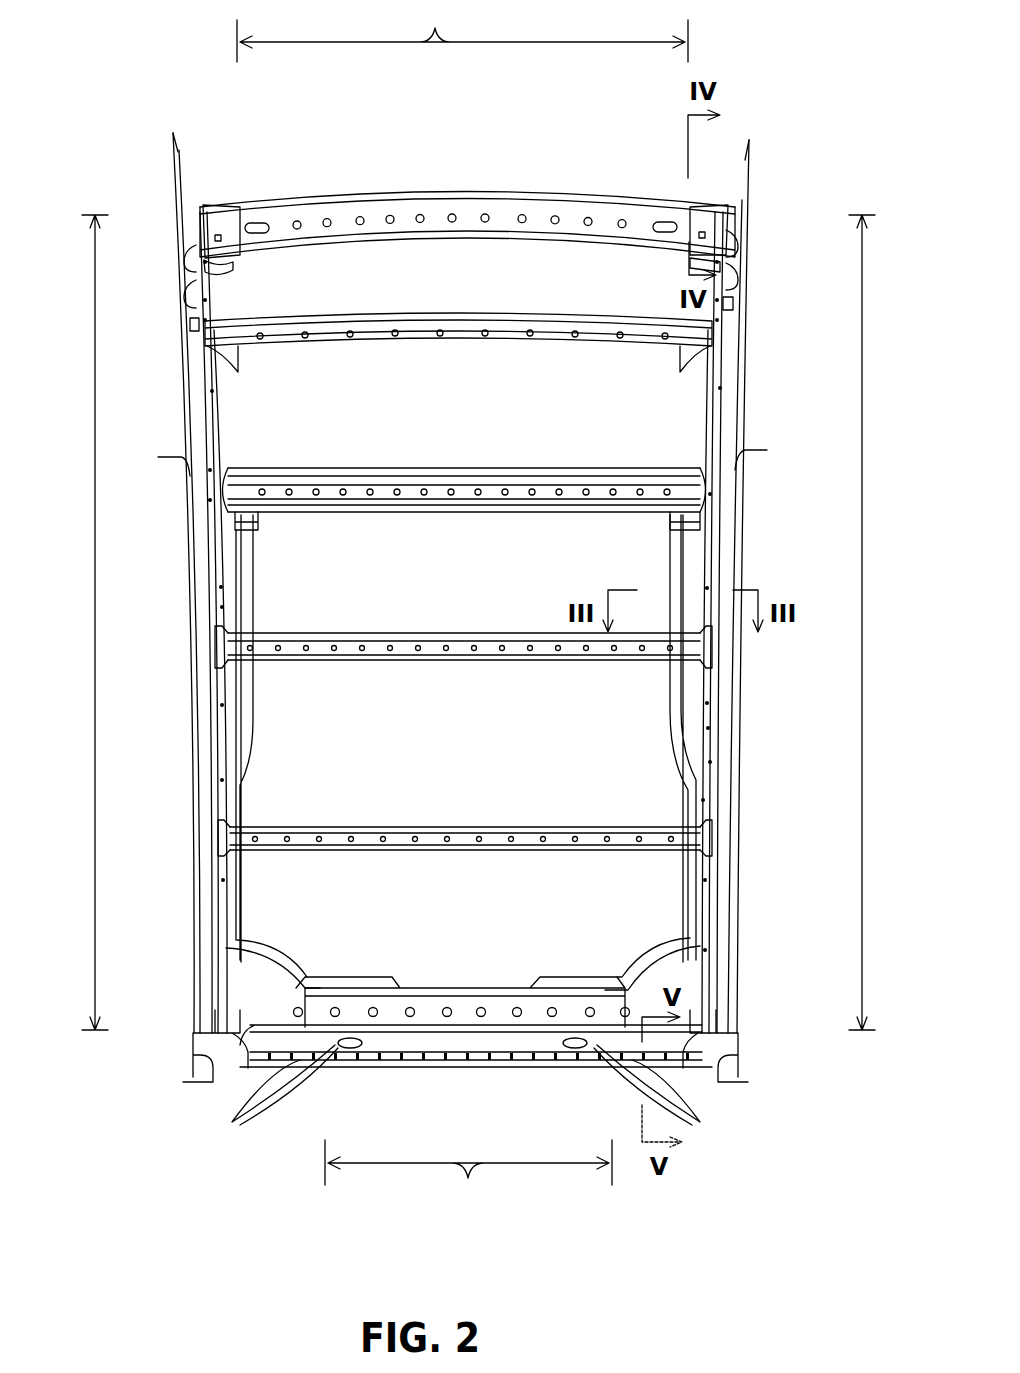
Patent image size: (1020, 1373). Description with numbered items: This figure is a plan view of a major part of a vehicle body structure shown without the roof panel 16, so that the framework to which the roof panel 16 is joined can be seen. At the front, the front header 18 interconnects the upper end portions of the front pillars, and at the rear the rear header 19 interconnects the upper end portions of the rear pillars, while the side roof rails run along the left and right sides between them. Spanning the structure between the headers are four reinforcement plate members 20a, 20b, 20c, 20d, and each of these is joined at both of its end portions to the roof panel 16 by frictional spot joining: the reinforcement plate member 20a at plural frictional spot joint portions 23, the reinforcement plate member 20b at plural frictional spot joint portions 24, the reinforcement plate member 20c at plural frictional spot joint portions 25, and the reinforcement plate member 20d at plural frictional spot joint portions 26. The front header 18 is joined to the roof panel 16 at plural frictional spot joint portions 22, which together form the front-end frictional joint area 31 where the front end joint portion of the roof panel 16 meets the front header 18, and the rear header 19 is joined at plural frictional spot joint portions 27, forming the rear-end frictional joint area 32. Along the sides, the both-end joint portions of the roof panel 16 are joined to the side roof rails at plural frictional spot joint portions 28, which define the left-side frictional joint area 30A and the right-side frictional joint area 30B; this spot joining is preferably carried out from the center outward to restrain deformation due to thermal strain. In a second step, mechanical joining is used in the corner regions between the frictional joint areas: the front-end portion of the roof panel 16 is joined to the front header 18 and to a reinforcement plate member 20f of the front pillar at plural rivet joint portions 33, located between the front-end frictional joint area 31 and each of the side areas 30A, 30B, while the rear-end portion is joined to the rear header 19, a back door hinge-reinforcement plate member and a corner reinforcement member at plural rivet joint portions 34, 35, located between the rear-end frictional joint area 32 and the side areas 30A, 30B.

The roof panel 16 is at (813, 162).
The front header 18 is at (504, 226).
The rear header 19 is at (474, 1052).
The reinforcement plate member 20a is at (487, 348).
The reinforcement plate member 20b is at (490, 514).
The reinforcement plate member 20c is at (490, 662).
The reinforcement plate member 20d is at (490, 852).
The reinforcement plate member of the front pillar 20f is at (226, 255).
The frictional spot joint portions 22 is at (415, 194).
The frictional spot joint portions 23 is at (240, 352).
The frictional spot joint portions 24 is at (220, 490).
The frictional spot joint portions 25 is at (220, 660).
The frictional spot joint portions 26 is at (225, 851).
The frictional spot joint portions 27 is at (372, 1060).
The frictional spot joint portions 28 is at (211, 391).
The left-side frictional joint area 30A is at (92, 598).
The right-side frictional joint area 30B is at (870, 598).
The front-end frictional joint area 31 is at (462, 31).
The rear-end frictional joint area 32 is at (468, 1179).
The rivet joint portions 33 is at (194, 210).
The rivet joint portions 34 is at (462, 1103).
The rivet joint portions 35 is at (305, 1045).